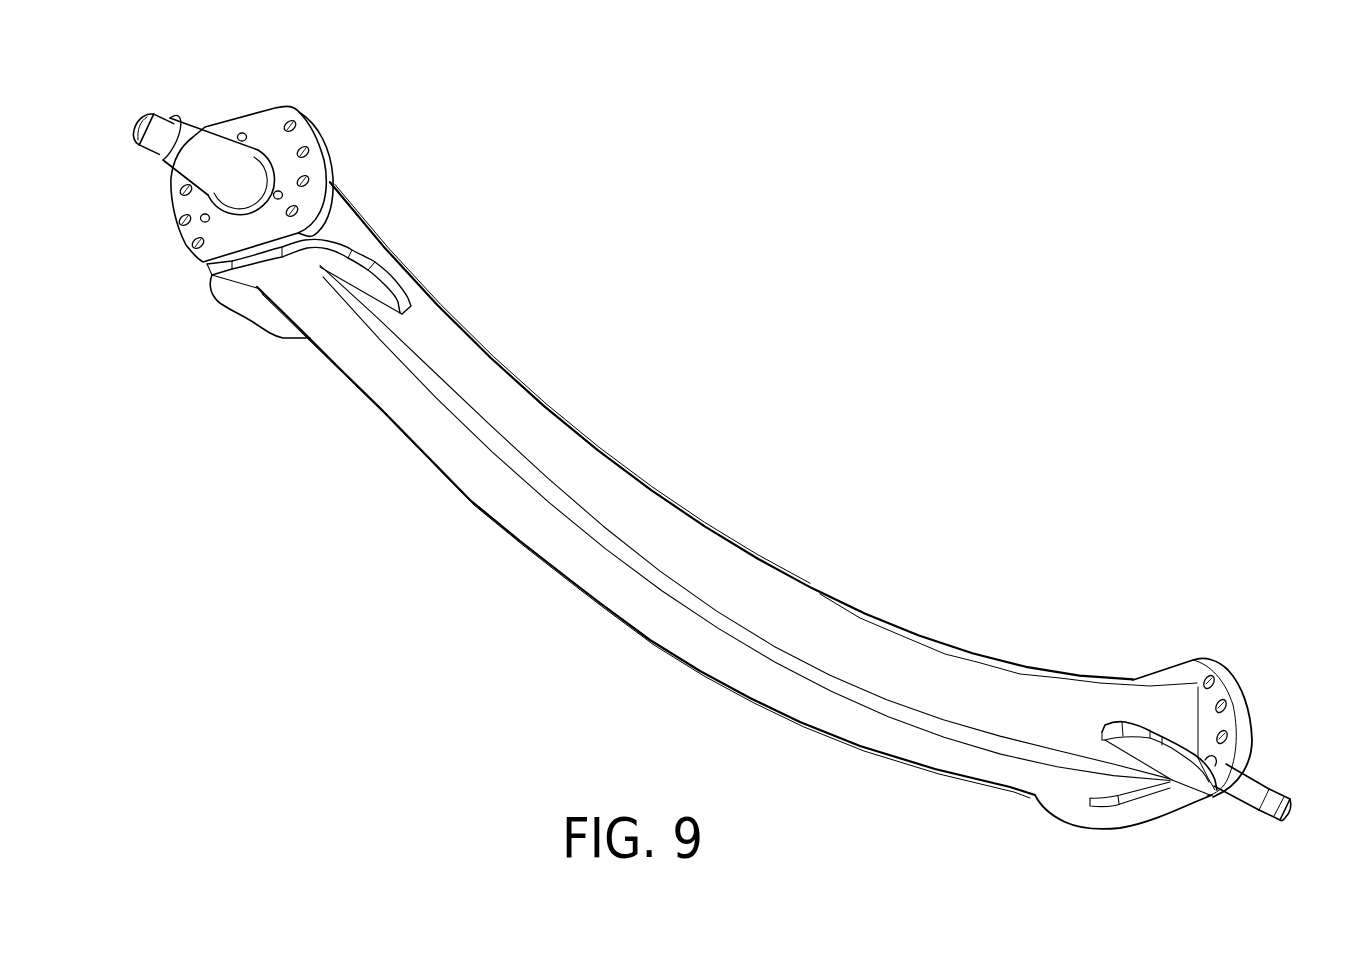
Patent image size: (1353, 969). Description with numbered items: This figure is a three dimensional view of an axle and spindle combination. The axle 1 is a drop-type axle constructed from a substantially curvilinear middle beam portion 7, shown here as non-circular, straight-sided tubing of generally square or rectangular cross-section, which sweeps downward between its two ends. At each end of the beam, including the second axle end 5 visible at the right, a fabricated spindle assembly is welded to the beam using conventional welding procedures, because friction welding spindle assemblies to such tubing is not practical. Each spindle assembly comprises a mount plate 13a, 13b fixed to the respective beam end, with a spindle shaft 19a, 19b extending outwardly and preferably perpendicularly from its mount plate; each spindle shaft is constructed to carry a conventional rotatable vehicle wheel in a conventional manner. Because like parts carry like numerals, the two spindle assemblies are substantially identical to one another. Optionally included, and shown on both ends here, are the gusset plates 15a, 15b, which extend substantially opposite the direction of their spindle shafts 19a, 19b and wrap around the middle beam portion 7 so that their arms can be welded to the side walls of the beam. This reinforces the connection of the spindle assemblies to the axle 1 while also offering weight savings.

The axle 1 is at (812, 463).
The second axle end 5 is at (1150, 708).
The middle beam portion 7 is at (788, 602).
The mount plate 13a is at (273, 120).
The mount plate 13b is at (1195, 668).
The gusset plate 15a is at (235, 297).
The gusset plate 15b is at (1160, 807).
The spindle shaft 19a is at (198, 168).
The spindle shaft 19b is at (1247, 777).